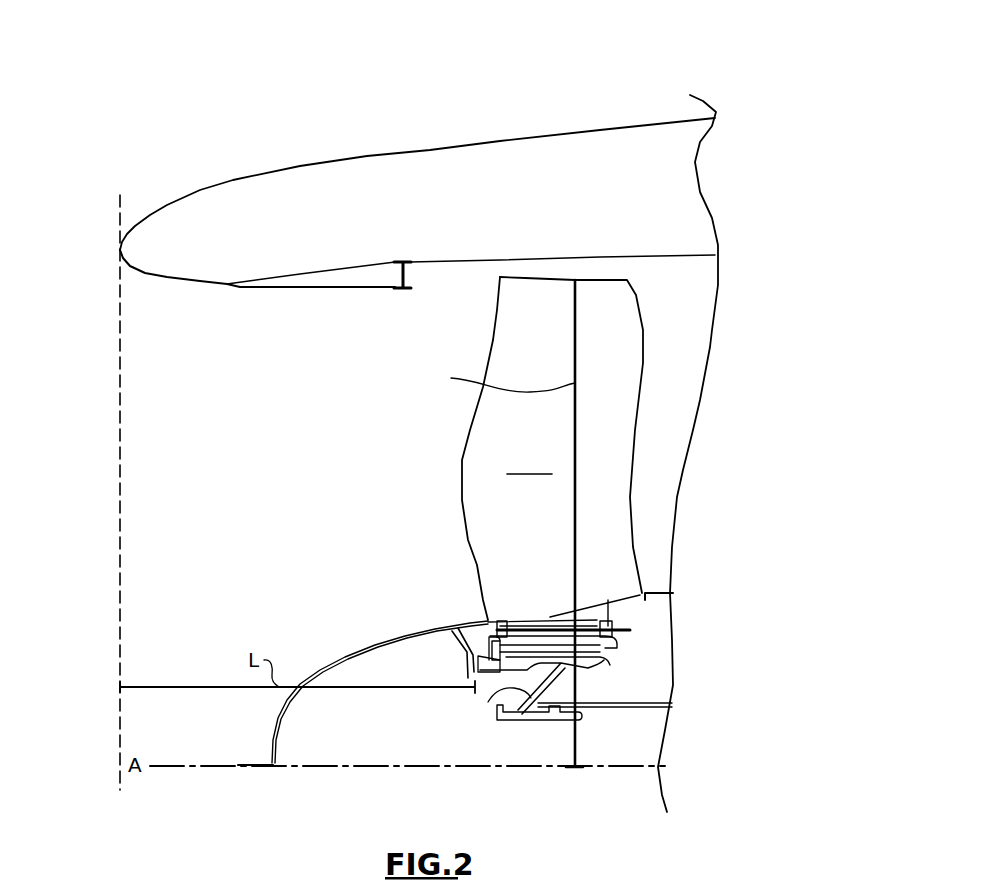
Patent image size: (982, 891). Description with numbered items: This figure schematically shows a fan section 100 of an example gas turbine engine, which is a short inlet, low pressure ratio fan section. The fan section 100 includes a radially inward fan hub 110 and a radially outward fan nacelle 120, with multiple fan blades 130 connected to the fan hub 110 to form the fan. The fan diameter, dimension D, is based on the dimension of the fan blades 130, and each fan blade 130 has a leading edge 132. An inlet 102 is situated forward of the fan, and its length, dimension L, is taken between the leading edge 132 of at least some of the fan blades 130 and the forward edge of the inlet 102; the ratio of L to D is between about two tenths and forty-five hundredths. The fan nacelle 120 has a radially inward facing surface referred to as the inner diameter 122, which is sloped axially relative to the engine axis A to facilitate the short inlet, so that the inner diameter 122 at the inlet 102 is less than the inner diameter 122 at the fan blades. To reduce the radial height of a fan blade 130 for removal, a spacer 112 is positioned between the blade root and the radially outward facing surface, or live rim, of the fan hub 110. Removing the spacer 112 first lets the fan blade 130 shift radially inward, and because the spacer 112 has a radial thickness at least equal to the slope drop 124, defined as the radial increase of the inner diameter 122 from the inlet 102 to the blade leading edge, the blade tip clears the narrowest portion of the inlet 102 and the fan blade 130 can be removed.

The fan section 100 is at (572, 68).
The inlet 102 is at (158, 512).
The fan hub 110 is at (497, 702).
The spacer 112 is at (612, 650).
The fan nacelle 120 is at (417, 177).
The inner diameter 122 is at (357, 262).
The slope drop 124 is at (410, 280).
The fan blade 130 is at (512, 522).
The leading edge 132 is at (462, 494).